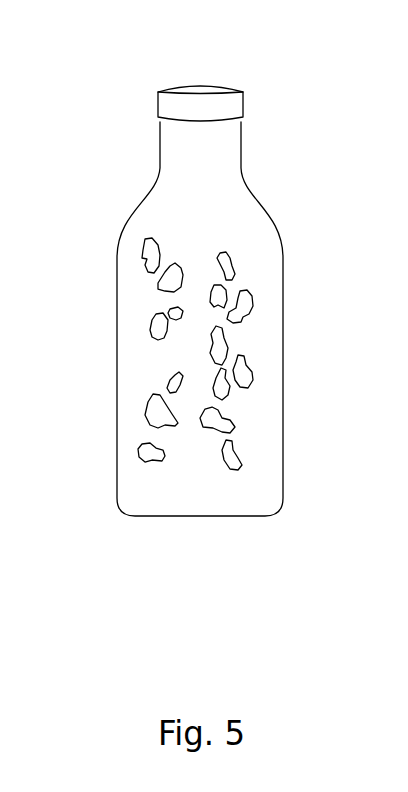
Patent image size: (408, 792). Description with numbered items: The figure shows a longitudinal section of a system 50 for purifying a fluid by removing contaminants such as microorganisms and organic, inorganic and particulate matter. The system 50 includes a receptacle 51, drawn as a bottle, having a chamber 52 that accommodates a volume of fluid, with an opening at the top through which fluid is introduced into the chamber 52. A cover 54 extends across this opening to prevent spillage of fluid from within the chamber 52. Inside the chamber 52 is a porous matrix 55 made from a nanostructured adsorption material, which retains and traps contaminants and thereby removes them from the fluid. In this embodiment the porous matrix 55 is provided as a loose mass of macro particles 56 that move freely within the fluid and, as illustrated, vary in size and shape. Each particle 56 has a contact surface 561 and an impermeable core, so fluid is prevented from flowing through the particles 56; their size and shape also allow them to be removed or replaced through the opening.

The system 50 is at (299, 72).
The receptacle 51 is at (116, 266).
The chamber 52 is at (210, 228).
The cover 54 is at (190, 82).
The porous matrix 55 is at (224, 343).
The macro particles 56 is at (233, 262).
The contact surface 561 is at (152, 393).